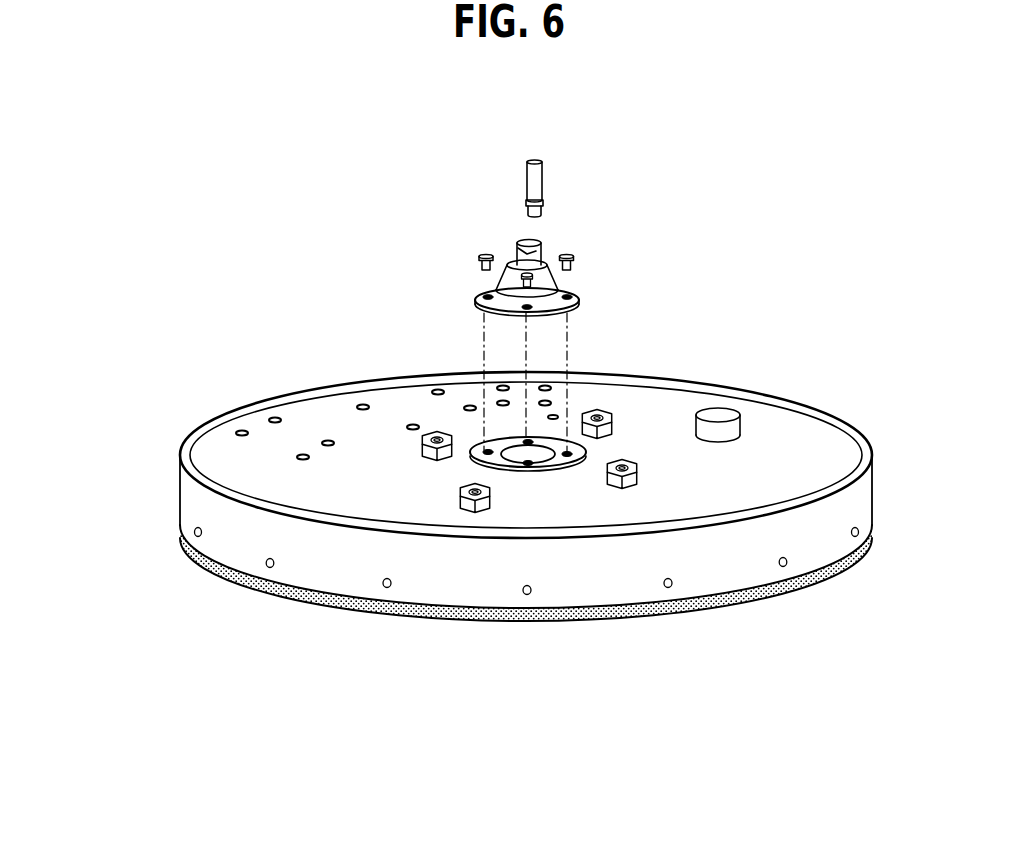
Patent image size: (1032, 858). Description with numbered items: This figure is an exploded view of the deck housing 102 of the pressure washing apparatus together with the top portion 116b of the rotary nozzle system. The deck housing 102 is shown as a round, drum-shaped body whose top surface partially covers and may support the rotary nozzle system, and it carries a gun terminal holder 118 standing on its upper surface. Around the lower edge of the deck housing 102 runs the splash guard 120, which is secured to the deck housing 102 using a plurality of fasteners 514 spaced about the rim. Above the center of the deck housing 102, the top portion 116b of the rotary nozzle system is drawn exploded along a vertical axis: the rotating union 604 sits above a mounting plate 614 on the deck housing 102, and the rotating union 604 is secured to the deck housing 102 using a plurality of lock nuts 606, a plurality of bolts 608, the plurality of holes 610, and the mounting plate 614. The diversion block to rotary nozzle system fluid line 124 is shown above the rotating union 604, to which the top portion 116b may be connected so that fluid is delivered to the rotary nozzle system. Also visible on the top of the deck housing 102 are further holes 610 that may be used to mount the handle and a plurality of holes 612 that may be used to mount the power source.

The top portion of the rotary nozzle system 116b is at (336, 250).
The diversion block to rotary nozzle system fluid line 124 is at (547, 188).
The bolts 608 is at (477, 260).
The rotating union 604 is at (557, 281).
The holes 610 is at (272, 418).
The holes 612 is at (437, 391).
The lock nuts 606 is at (624, 468).
The gun terminal holder 118 is at (731, 422).
The deck housing 102 is at (185, 500).
The fasteners 514 is at (270, 567).
The splash guard 120 is at (403, 617).
The mounting plate 614 is at (545, 469).